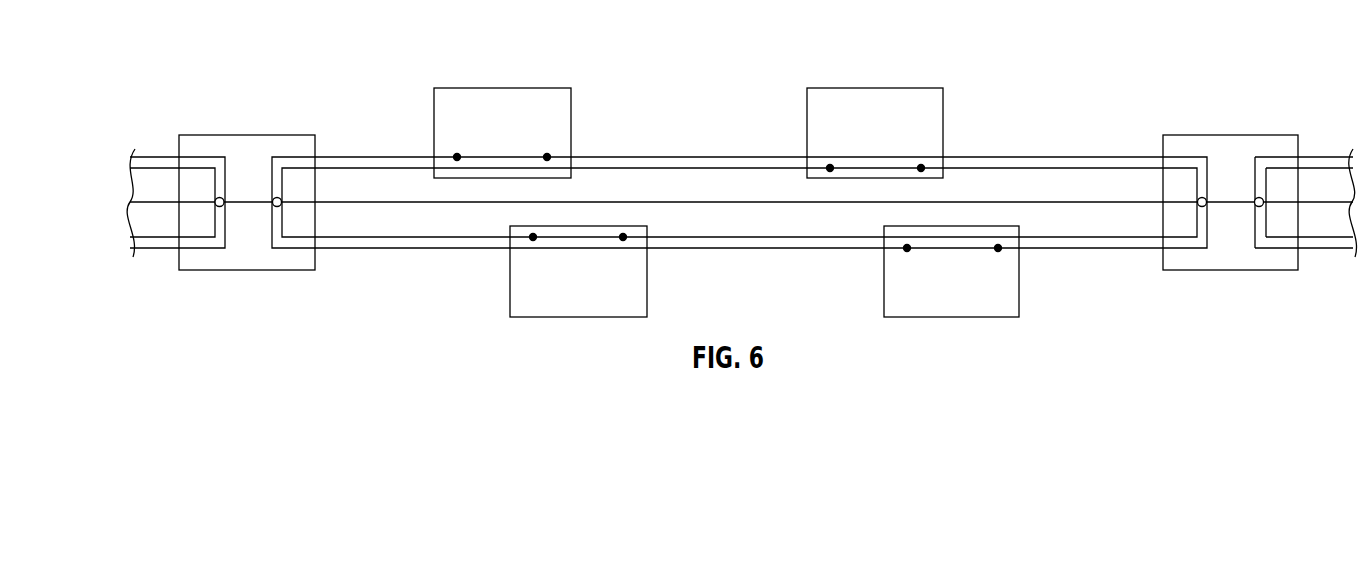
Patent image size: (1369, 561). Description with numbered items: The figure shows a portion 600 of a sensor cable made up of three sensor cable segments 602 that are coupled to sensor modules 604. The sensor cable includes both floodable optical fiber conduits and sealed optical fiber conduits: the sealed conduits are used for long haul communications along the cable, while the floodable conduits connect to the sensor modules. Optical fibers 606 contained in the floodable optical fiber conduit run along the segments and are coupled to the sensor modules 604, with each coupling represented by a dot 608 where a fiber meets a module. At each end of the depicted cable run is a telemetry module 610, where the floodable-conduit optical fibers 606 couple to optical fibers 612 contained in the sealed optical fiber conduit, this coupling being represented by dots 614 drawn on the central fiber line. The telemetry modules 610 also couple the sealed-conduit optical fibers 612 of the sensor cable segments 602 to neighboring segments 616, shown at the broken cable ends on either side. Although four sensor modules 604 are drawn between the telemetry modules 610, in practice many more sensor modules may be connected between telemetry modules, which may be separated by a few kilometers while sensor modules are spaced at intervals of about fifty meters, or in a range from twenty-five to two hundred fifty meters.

The portion of a sensor cable 600 is at (185, 26).
The sensor cable segments 602 is at (741, 205).
The sensor modules 604 is at (764, 201).
The optical fibers 606 is at (357, 156).
The dots 608 is at (457, 157).
The telemetry modules 610 is at (738, 172).
The optical fibers 612 is at (642, 201).
The dots 614 is at (273, 197).
The neighboring segments 616 is at (162, 149).